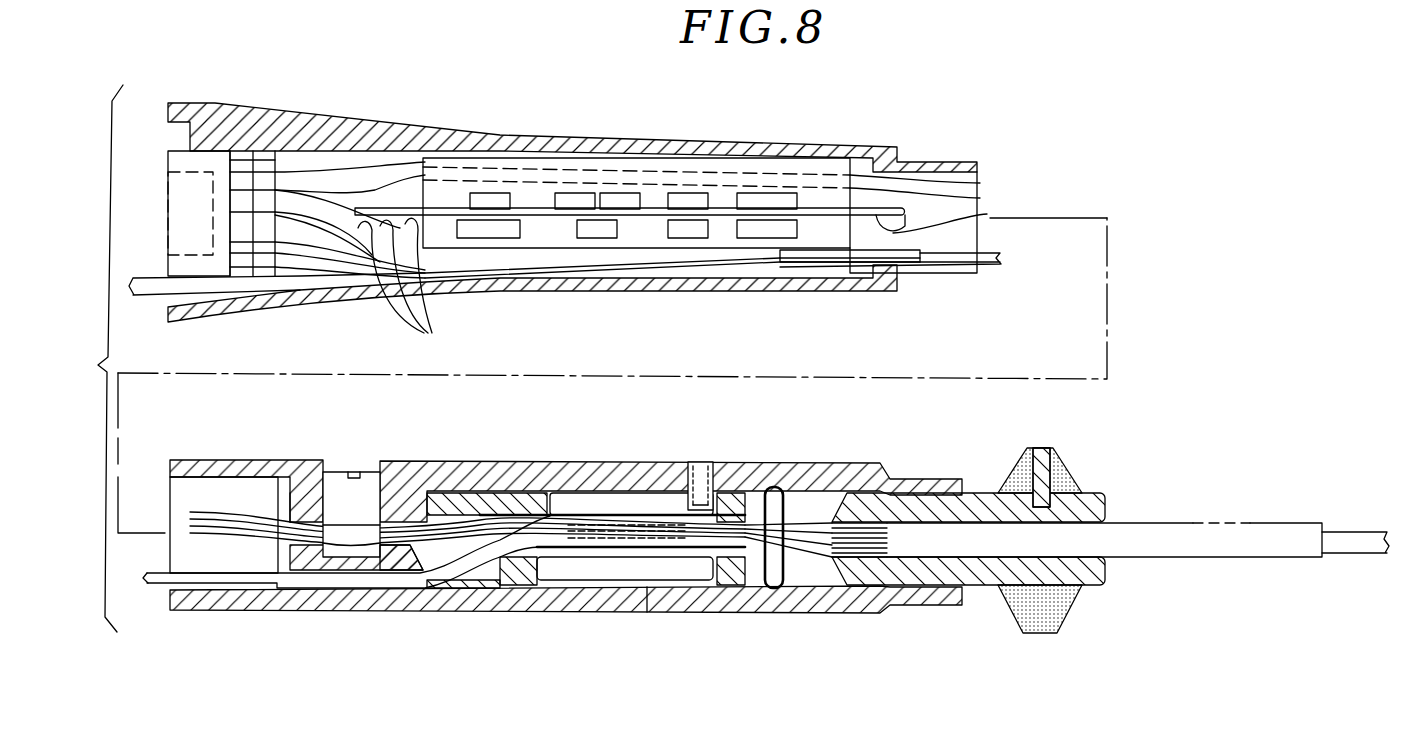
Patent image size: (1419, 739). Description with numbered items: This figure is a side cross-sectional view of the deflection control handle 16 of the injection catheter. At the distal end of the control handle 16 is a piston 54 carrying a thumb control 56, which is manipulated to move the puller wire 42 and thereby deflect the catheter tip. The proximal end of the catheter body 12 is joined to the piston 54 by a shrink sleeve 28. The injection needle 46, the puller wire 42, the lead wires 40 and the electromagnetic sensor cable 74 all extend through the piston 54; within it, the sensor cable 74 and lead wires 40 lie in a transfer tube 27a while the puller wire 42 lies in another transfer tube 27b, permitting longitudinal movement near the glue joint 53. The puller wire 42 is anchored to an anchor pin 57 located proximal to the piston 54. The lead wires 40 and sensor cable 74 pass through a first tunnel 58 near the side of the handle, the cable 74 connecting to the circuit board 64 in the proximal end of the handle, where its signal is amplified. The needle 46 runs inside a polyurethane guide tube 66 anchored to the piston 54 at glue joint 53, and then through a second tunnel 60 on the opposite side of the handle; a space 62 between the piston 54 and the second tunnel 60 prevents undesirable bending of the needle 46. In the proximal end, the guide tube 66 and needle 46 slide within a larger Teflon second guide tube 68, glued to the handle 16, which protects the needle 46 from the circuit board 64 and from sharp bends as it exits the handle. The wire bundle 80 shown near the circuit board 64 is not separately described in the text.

The deflection control handle 16 is at (561, 112).
The circuit board 64 is at (452, 198).
The electromagnetic sensor cable 74 is at (985, 213).
The lead wires 40 is at (983, 186).
The wire bundle 80 is at (373, 270).
The guide tube 66 is at (993, 243).
The second guide tube 68 is at (900, 260).
The second tunnel 60 is at (322, 590).
The first tunnel 58 is at (302, 537).
The anchor pin 57 is at (353, 497).
The space 62 is at (447, 560).
The puller wire 42 is at (487, 483).
The glue joint 53 is at (630, 557).
The transfer tube 27b is at (613, 537).
The transfer tube 27a is at (662, 527).
The injection needle 46 is at (717, 560).
The piston 54 is at (990, 507).
The thumb control 56 is at (1058, 468).
The shrink sleeve 28 is at (1228, 537).
The catheter body 12 is at (1353, 538).